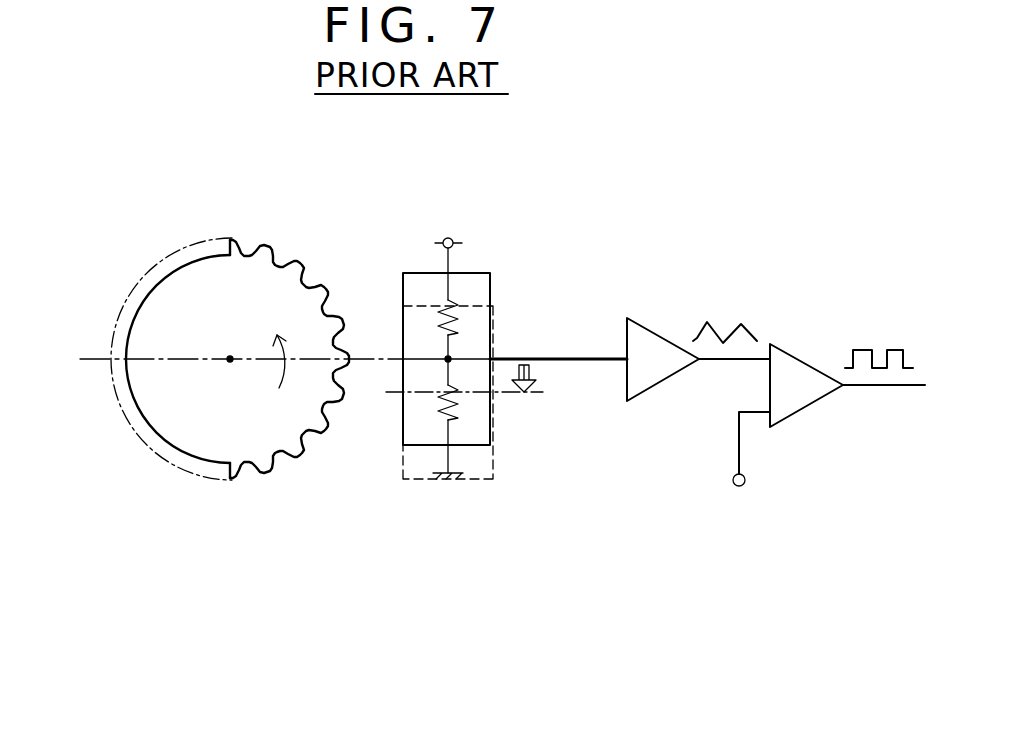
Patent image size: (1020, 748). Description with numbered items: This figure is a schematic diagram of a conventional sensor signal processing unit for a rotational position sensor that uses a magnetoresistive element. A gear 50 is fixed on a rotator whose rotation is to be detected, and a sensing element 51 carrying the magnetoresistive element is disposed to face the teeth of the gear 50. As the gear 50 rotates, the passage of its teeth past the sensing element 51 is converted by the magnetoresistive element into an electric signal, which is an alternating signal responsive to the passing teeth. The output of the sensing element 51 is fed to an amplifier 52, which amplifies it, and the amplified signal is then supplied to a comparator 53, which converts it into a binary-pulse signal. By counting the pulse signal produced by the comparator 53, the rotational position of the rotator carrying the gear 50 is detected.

The gear 50 is at (187, 427).
The sensing element 51 is at (477, 273).
The amplifier 52 is at (653, 328).
The comparator 53 is at (808, 357).